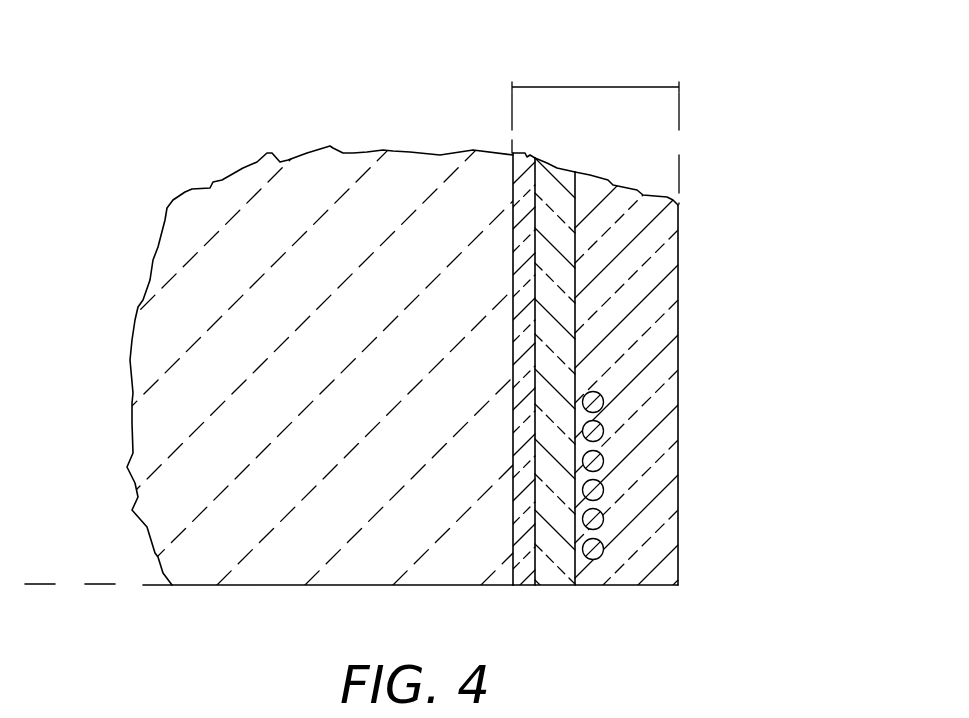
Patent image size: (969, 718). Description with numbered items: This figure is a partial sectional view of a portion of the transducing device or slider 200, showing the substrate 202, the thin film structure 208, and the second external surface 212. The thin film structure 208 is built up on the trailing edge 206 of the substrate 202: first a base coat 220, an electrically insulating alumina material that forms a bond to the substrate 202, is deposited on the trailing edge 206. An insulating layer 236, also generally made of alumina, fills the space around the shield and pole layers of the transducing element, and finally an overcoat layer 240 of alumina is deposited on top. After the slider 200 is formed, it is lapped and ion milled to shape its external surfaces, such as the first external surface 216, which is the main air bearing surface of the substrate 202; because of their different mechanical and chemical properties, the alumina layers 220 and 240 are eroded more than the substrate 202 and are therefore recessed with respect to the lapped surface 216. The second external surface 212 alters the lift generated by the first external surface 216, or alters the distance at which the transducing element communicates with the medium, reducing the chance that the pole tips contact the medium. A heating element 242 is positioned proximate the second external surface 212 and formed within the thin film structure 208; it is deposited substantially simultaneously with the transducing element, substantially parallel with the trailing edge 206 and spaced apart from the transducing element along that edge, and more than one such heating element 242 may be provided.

The slider 200 is at (463, 361).
The substrate 202 is at (218, 363).
The trailing edge 206 is at (512, 517).
The thin film structure 208 is at (572, 87).
The second external surface 212 is at (624, 586).
The first external surface 216 is at (352, 586).
The base coat 220 is at (522, 158).
The insulating layer 236 is at (553, 180).
The overcoat layer 240 is at (650, 273).
The heating element 242 is at (634, 410).